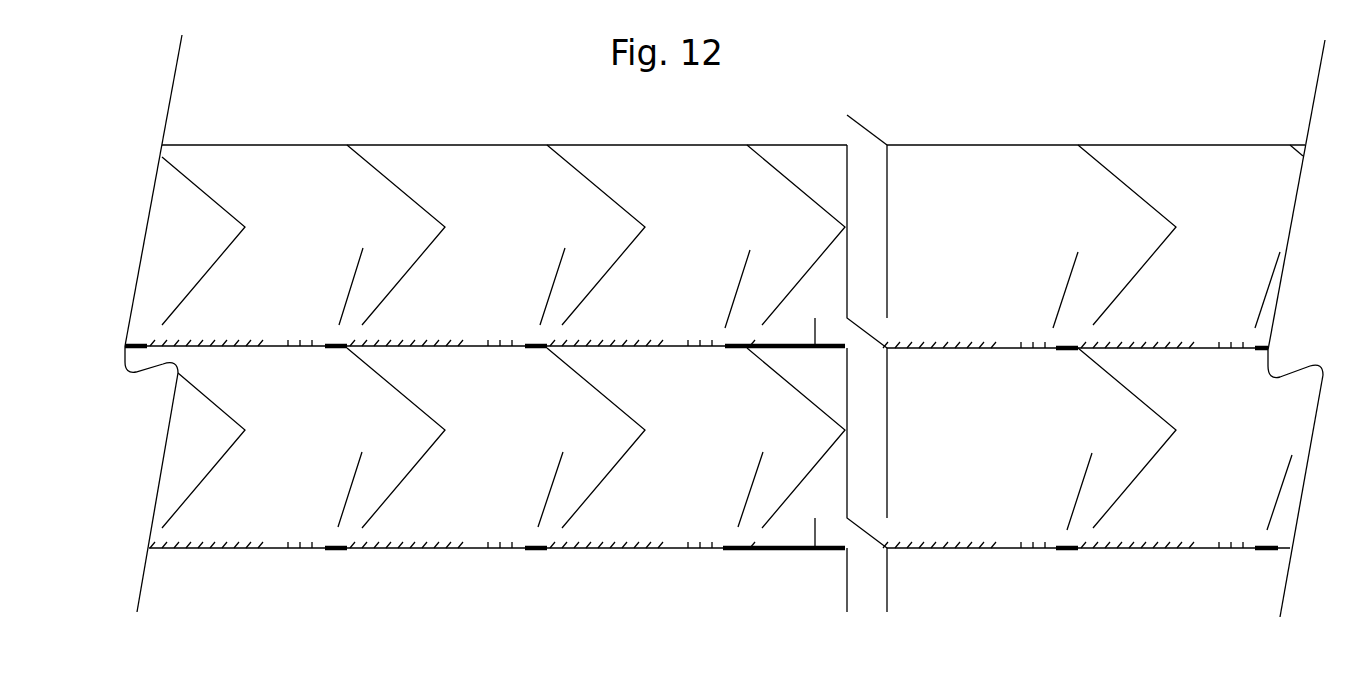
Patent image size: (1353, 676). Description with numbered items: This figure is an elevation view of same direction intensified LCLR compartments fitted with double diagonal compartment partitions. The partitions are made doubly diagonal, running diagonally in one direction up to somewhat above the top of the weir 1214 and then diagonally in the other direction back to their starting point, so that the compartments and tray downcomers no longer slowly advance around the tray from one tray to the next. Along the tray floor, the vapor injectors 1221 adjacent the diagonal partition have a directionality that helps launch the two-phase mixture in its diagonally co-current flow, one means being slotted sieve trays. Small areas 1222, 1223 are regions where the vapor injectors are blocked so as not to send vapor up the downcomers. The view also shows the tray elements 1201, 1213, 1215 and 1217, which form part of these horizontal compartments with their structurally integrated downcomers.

The substrate 1201 is at (1010, 350).
The conductive trace 1213 is at (1100, 167).
The weir 1214 is at (1073, 267).
The cut line 1215 is at (888, 190).
The electrode pad 1217 is at (815, 318).
The vapor injectors 1221 is at (672, 535).
The blocked vapor injector area 1222 is at (785, 552).
The blocked vapor injector area 1223 is at (533, 550).